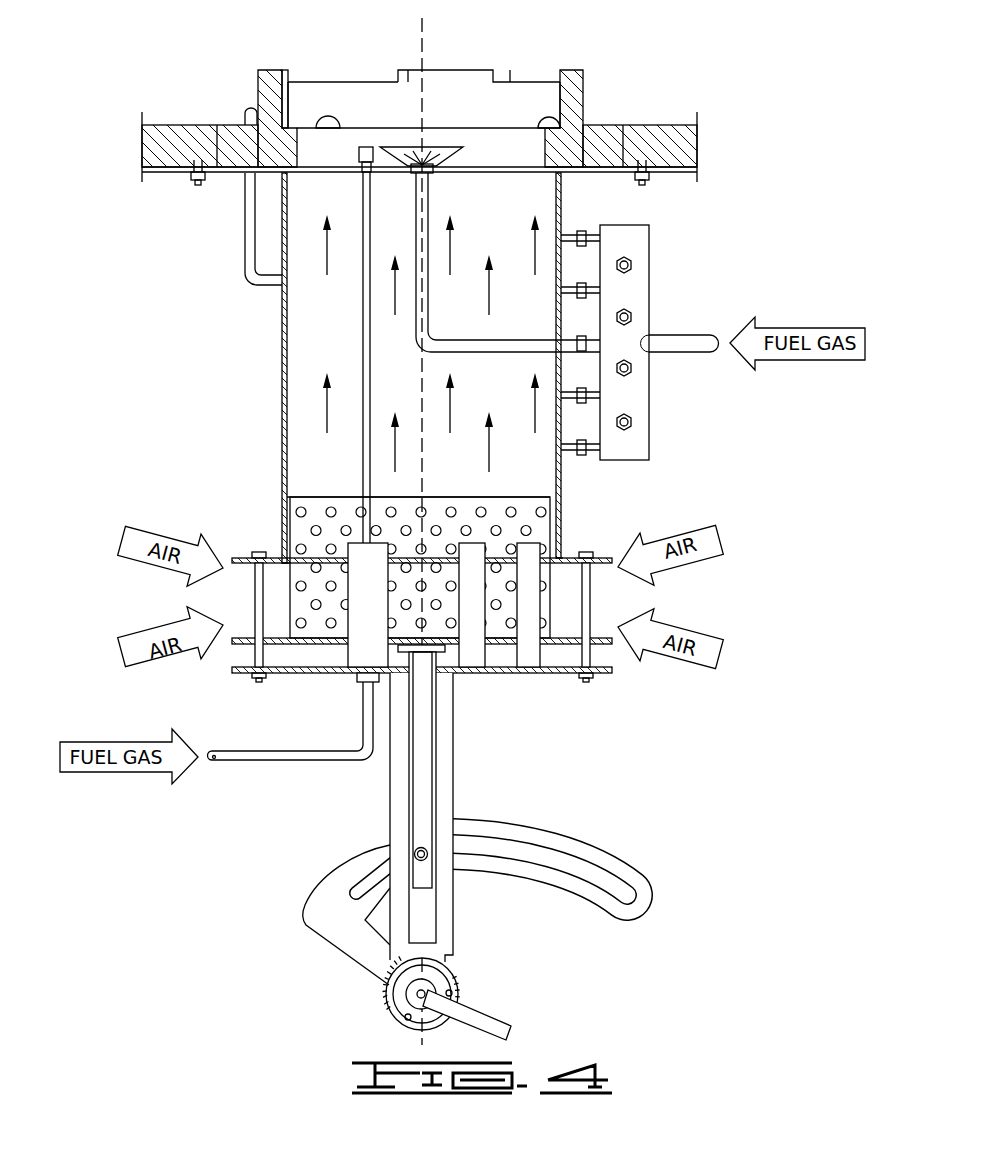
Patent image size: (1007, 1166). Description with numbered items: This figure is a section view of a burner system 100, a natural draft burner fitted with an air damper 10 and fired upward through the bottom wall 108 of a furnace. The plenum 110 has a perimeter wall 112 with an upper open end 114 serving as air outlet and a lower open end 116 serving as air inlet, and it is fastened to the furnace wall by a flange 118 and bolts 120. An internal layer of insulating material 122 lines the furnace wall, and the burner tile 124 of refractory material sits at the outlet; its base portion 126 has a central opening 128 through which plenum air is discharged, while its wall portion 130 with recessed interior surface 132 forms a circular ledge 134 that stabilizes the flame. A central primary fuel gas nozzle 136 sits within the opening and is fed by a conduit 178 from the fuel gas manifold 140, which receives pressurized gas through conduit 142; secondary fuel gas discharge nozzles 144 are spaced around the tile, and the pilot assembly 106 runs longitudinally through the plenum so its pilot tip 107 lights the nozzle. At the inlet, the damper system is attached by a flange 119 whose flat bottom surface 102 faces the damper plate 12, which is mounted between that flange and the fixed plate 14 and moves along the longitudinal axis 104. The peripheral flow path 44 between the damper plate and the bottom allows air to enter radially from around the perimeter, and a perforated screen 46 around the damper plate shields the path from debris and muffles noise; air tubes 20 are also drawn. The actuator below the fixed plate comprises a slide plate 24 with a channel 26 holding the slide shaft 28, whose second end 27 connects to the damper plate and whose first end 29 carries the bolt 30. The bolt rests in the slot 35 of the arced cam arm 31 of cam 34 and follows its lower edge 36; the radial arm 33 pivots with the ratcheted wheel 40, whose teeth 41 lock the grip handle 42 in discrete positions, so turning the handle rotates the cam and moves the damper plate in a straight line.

The air damper 10 is at (620, 737).
The damper plate 12 is at (232, 668).
The fixed plate 14 is at (607, 674).
The air tubes 20 is at (528, 655).
The slide plate 24 is at (392, 810).
The channel 26 is at (432, 927).
The second end 27 is at (442, 648).
The slide shaft 28 is at (432, 752).
The first end 29 is at (430, 882).
The bolt 30 is at (414, 853).
The arced cam arm 31 is at (590, 838).
The radial arm 33 is at (312, 930).
The cam 34 is at (320, 890).
The slot 35 is at (514, 843).
The lower edge 36 is at (597, 882).
The ratcheted wheel 40 is at (395, 1012).
The teeth 41 is at (456, 985).
The grip handle 42 is at (512, 1025).
The flow path 44 is at (606, 600).
The screen 46 is at (300, 497).
The burner system 100 is at (720, 78).
The bottom surface 102 is at (262, 560).
The longitudinal axis 104 is at (418, 30).
The pilot assembly 106 is at (363, 358).
The pilot tip 107 is at (365, 146).
The bottom wall 108 is at (690, 174).
The plenum 110 is at (248, 312).
The perimeter wall 112 is at (282, 418).
The open end 114 is at (556, 180).
The open end 116 is at (556, 533).
The flange 118 is at (235, 182).
The flange 119 is at (598, 557).
The bolts 120 is at (198, 182).
The insulating material 122 is at (660, 125).
The burner tile 124 is at (252, 66).
The base portion 126 is at (605, 125).
The central opening 128 is at (546, 142).
The wall portion 130 is at (258, 80).
The recessed interior surface 132 is at (286, 72).
The circular ledge 134 is at (290, 126).
The central primary fuel gas nozzle 136 is at (432, 147).
The fuel gas manifold 140 is at (650, 418).
The conduit 142 is at (680, 332).
The secondary fuel gas discharge nozzles 144 is at (330, 112).
The conduit 178 is at (514, 340).